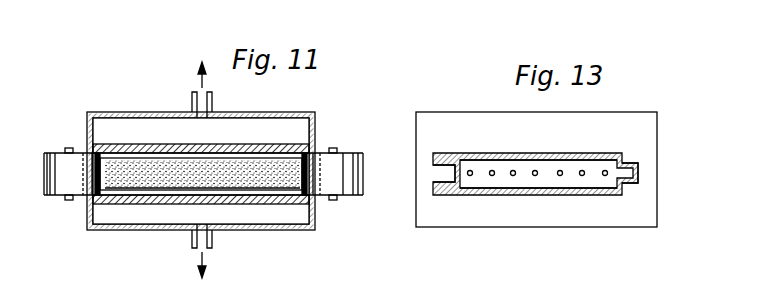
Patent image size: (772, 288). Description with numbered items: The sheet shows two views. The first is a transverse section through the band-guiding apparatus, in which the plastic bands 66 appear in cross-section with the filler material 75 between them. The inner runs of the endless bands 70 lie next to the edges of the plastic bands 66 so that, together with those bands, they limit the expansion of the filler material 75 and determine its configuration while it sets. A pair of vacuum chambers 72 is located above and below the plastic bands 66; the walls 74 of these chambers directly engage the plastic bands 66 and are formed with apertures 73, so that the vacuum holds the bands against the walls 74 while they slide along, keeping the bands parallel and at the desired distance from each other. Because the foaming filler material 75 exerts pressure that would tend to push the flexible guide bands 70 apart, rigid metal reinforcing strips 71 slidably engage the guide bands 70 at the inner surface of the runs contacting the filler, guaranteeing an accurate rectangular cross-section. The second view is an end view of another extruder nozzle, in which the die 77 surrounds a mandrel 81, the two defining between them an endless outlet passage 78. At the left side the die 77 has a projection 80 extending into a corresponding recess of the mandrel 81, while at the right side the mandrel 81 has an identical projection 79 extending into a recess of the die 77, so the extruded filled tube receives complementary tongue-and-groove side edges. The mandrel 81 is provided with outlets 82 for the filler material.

In FIG. 11, the plastic bands 66 is at (250, 148).
In FIG. 11, the endless bands 70 is at (362, 160).
In FIG. 11, the reinforcing strips 71 is at (91, 173).
In FIG. 11, the vacuum chambers 72 is at (135, 124).
In FIG. 11, the apertures 73 is at (147, 204).
In FIG. 11, the walls 74 is at (177, 204).
In FIG. 11, the filler material 75 is at (279, 205).
In FIG. 13, the die 77 is at (441, 123).
In FIG. 13, the outlet passage 78 is at (573, 153).
In FIG. 13, the projection 79 is at (628, 174).
In FIG. 13, the projection 80 is at (440, 173).
In FIG. 13, the mandrel 81 is at (485, 182).
In FIG. 13, the outlets 82 is at (513, 176).